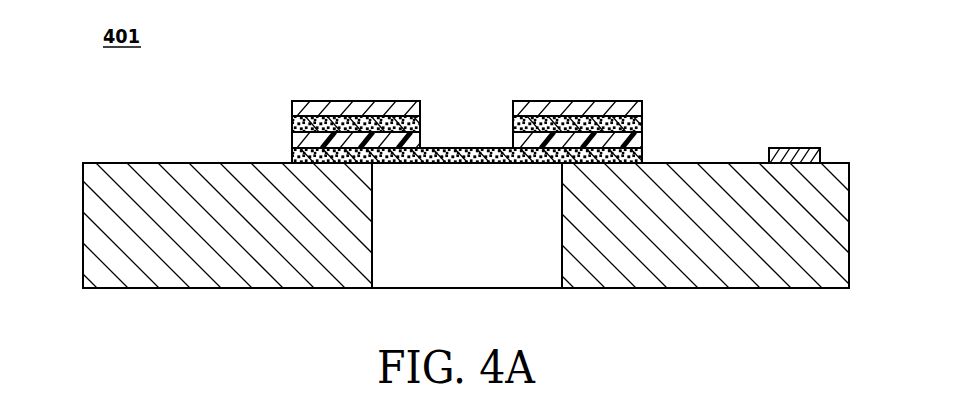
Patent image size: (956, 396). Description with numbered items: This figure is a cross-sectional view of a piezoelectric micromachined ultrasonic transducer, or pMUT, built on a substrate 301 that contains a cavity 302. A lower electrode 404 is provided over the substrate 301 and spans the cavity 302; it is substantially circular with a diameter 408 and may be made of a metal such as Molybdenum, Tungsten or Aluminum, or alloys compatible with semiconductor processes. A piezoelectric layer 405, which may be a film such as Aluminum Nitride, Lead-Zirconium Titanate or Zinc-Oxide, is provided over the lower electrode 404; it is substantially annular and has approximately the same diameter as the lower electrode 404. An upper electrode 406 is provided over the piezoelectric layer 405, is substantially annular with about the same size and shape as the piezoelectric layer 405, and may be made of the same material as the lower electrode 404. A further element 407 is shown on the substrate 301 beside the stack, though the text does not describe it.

The substrate 301 is at (113, 232).
The cavity 302 is at (458, 270).
The lower electrode 404 is at (292, 158).
The piezoelectric layer 405 is at (643, 142).
The upper electrode 406 is at (292, 125).
The contact pad 407 is at (793, 148).
The diameter 408 is at (642, 30).